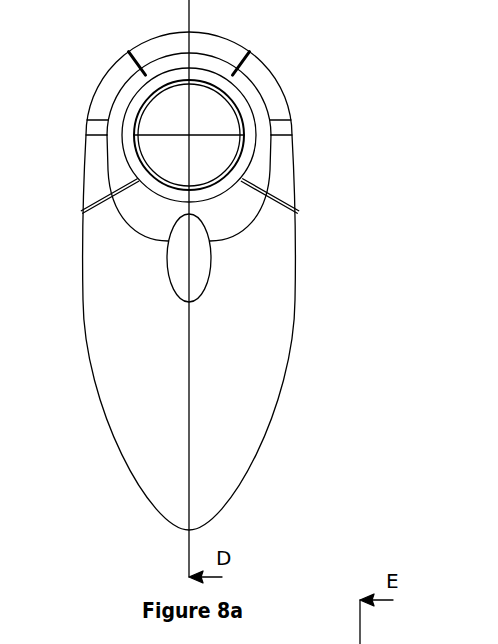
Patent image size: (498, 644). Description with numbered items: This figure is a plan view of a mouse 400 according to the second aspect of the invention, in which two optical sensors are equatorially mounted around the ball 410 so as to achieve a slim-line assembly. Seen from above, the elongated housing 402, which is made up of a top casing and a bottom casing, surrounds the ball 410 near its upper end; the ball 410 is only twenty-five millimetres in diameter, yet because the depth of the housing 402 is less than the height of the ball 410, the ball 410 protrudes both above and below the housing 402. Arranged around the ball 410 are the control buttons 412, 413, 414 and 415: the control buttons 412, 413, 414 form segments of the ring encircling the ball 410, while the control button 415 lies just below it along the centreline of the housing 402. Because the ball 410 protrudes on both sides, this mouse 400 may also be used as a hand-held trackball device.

The mouse 400 is at (214, 266).
The housing 402 is at (252, 443).
The ball 410 is at (225, 152).
The control button 412 is at (112, 80).
The control button 413 is at (213, 43).
The control button 414 is at (275, 93).
The control button 415 is at (196, 268).